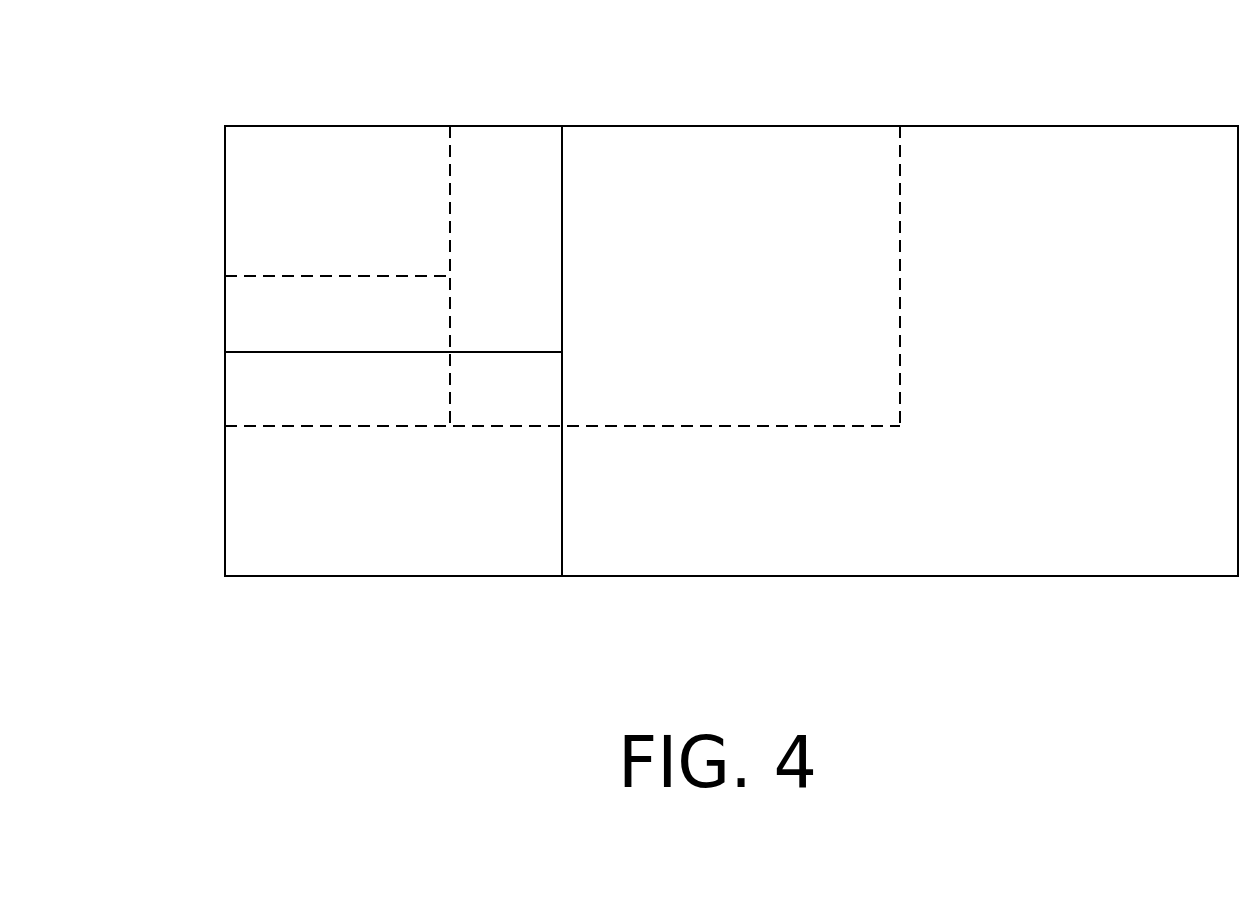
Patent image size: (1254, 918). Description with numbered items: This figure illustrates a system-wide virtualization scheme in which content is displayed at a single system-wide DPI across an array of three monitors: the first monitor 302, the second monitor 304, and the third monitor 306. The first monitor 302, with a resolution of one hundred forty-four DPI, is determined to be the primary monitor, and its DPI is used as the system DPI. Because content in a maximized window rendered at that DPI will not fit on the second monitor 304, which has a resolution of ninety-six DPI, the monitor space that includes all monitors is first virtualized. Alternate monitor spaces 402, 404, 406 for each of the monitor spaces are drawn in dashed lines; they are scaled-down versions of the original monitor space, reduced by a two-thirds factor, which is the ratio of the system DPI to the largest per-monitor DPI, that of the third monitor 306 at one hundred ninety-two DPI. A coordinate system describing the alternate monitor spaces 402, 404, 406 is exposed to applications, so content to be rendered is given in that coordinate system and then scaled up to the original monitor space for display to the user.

The first monitor 302 is at (562, 210).
The second monitor 304 is at (418, 477).
The third monitor 306 is at (1111, 349).
The alternate monitor space 402 is at (450, 195).
The alternate monitor space 404 is at (282, 426).
The alternate monitor space 406 is at (900, 212).